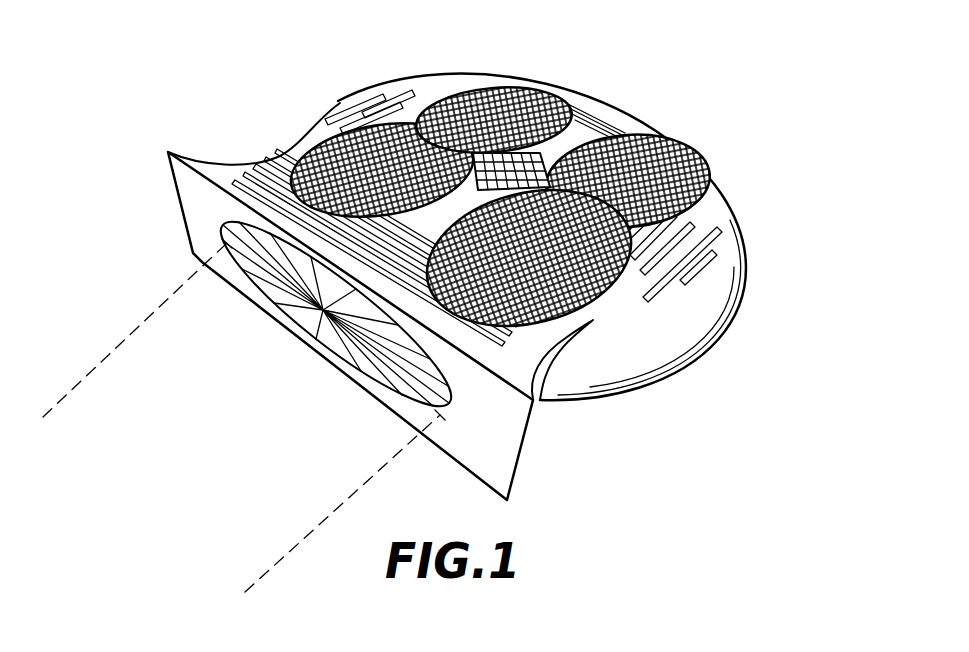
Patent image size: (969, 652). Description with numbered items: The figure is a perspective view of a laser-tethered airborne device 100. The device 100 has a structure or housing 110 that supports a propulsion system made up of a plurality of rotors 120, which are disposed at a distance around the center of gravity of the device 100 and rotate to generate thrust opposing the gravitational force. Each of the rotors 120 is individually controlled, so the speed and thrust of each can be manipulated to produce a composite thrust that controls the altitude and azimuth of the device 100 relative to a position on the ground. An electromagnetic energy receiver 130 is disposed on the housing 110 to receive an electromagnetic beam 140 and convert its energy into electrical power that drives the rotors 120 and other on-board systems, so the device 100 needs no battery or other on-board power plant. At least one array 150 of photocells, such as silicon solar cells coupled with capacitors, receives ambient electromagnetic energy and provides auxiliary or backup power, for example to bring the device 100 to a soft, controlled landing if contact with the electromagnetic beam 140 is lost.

The laser-tethered airborne device 100 is at (443, 306).
The housing 110 is at (713, 350).
The rotors 120 is at (540, 97).
The electromagnetic energy receiver 130 is at (240, 255).
The electromagnetic beam 140 is at (130, 343).
The array of photocells 150 is at (256, 185).